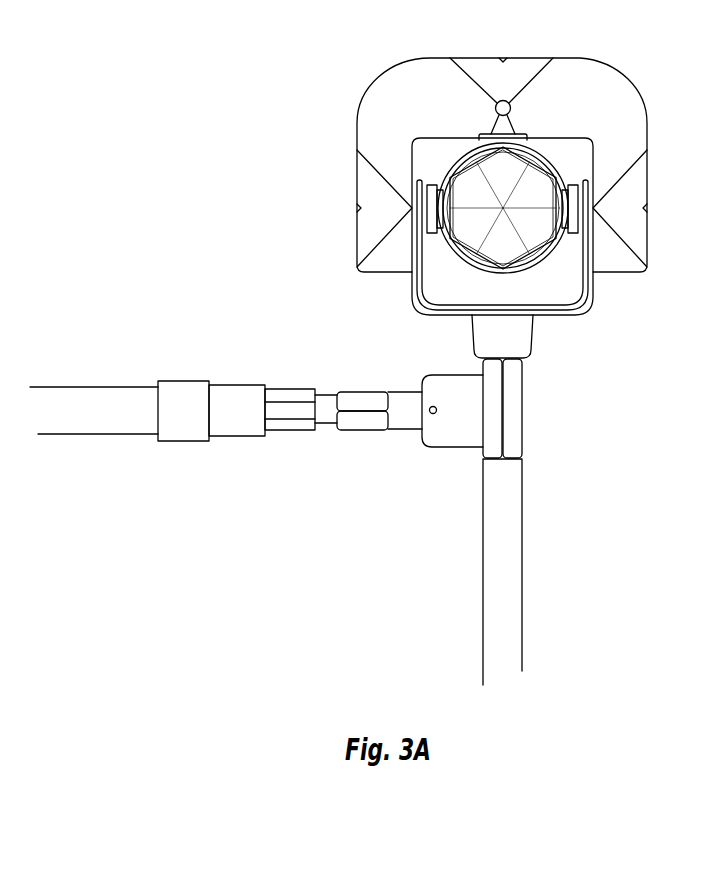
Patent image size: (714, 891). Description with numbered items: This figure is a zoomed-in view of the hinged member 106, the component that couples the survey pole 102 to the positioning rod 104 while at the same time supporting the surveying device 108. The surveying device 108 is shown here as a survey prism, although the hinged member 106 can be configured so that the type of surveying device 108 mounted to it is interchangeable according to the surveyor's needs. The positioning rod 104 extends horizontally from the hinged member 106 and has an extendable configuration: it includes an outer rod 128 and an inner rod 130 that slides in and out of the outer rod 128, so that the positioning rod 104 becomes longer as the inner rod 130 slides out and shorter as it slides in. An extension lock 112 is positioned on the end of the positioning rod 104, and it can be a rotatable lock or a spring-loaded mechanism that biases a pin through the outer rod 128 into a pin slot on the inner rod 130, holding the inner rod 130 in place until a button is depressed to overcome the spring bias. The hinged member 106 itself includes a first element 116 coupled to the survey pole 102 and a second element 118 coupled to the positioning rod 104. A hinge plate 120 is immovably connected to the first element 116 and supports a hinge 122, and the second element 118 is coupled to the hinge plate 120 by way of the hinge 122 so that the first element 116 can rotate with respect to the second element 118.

The survey pole 102 is at (513, 540).
The positioning rod 104 is at (92, 393).
The hinged member 106 is at (552, 377).
The surveying device 108 is at (523, 57).
The extension lock 112 is at (186, 388).
The first element 116 is at (517, 428).
The second element 118 is at (361, 397).
The hinge plate 120 is at (455, 378).
The hinge 122 is at (433, 415).
The outer rod 128 is at (237, 437).
The inner rod 130 is at (290, 391).